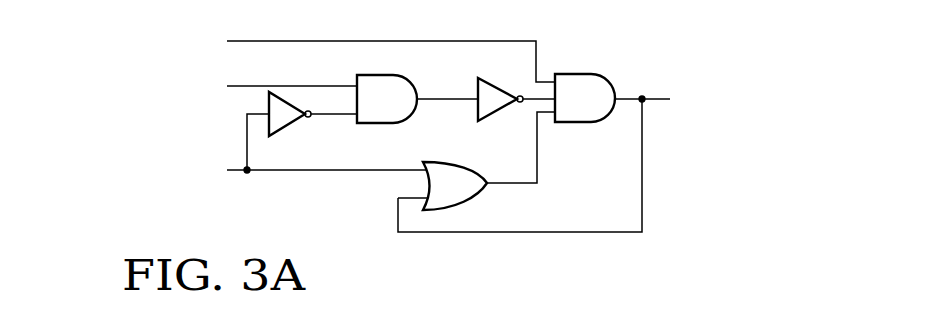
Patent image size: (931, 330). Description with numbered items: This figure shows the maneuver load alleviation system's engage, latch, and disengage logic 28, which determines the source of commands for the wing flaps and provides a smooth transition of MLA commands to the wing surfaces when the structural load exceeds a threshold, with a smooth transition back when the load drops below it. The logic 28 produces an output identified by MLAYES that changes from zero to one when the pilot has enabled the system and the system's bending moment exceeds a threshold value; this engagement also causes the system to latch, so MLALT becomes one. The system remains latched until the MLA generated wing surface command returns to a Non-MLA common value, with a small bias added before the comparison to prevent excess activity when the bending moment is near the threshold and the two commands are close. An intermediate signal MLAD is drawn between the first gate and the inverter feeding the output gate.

The engage, latch, and disengage logic 28 is at (597, 37).
The element MLAD is at (417, 99).
The latch signal MLALT is at (488, 186).
The logic output MLAYES is at (651, 98).